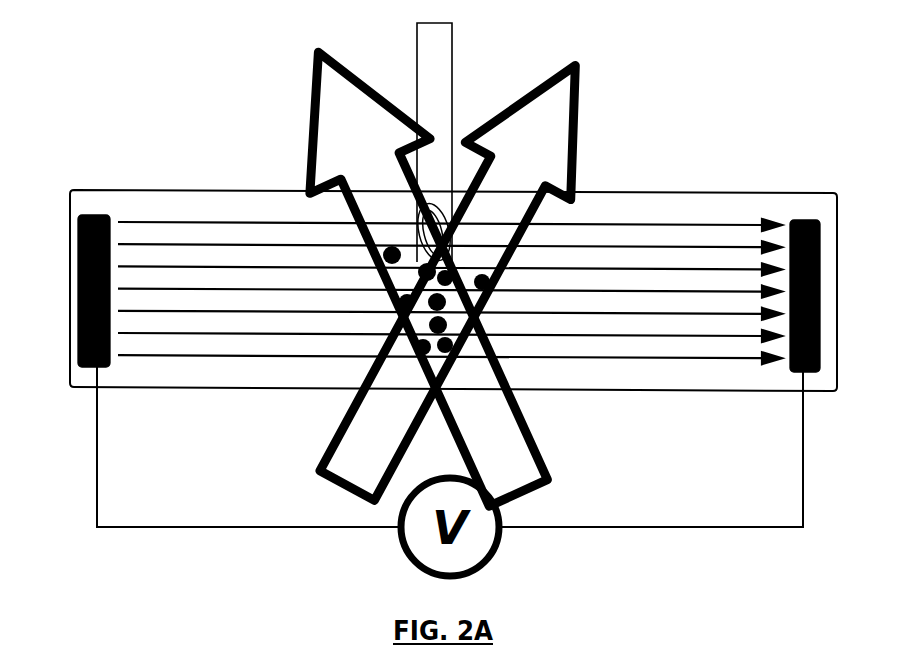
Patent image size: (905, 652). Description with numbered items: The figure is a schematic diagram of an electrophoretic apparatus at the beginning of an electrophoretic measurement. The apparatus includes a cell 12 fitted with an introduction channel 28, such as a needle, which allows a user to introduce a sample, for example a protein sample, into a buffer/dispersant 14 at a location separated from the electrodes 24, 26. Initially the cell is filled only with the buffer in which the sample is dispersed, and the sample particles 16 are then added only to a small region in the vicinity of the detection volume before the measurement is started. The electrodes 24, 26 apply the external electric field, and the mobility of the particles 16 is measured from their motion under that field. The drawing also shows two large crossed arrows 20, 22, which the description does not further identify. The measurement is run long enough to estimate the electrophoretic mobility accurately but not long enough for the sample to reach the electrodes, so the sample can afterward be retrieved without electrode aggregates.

The cell 12 is at (772, 192).
The buffer/dispersant 14 is at (730, 215).
The particles 16 is at (391, 315).
The first direction arrow 20 is at (343, 422).
The second direction arrow 22 is at (527, 420).
The electrode 24 is at (80, 218).
The electrode 26 is at (820, 222).
The introduction channel 28 is at (454, 57).